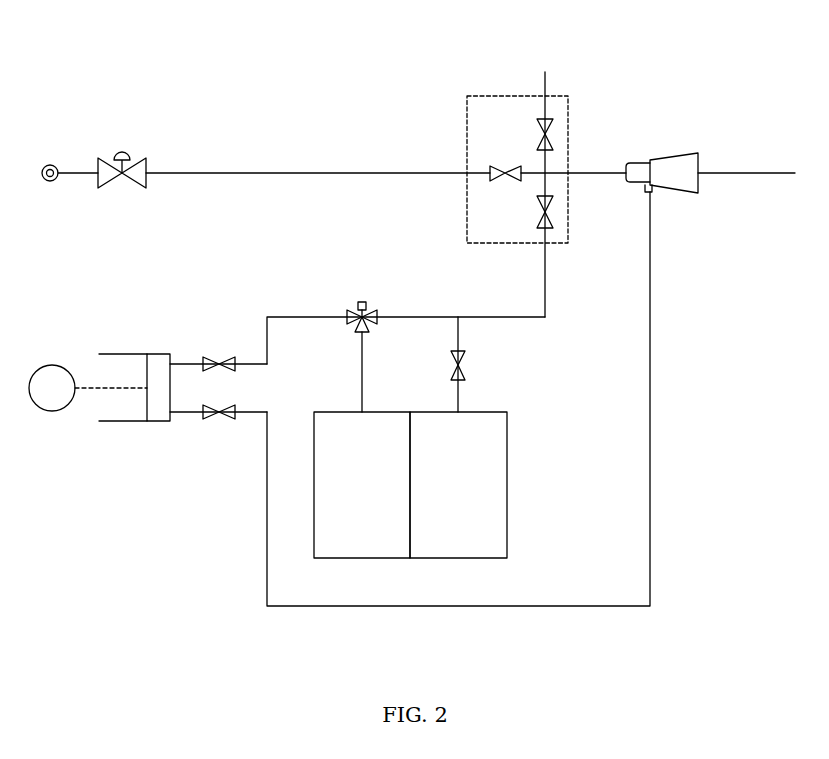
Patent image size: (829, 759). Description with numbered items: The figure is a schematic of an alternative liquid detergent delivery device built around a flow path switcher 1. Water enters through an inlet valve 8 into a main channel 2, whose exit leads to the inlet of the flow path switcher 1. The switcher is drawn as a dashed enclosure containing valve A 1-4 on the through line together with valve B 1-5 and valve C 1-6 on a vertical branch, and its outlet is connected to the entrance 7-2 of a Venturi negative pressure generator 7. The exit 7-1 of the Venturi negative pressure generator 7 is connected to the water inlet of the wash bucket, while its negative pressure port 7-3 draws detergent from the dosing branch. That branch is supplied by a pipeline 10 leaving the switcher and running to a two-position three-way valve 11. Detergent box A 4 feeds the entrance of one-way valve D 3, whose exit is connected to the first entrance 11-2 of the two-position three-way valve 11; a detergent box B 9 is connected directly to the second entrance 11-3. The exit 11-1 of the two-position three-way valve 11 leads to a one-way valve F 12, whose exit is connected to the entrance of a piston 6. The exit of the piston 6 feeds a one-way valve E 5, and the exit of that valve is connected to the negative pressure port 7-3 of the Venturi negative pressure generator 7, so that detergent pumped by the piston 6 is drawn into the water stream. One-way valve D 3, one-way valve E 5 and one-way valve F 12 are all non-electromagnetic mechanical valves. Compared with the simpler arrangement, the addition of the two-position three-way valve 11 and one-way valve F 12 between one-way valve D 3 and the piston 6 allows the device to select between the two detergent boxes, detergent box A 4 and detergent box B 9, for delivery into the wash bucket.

The flow path switcher 1 is at (529, 168).
The valve A 1-4 is at (490, 180).
The valve B 1-5 is at (552, 225).
The valve C 1-6 is at (553, 122).
The main channel 2 is at (280, 173).
The one-way valve D 3 is at (463, 363).
The detergent box A 4 is at (478, 495).
The one-way valve E 5 is at (205, 418).
The piston 6 is at (130, 400).
The Venturi negative pressure generator 7 is at (683, 178).
The exit 7-1 is at (698, 165).
The entrance 7-2 is at (627, 173).
The negative pressure port 7-3 is at (652, 192).
The inlet valve 8 is at (137, 175).
The detergent box B 9 is at (328, 486).
The pipeline 10 is at (267, 317).
The two-position three-way valve 11 is at (362, 318).
The exit 11-1 is at (348, 313).
The entrance 1 11-2 is at (378, 314).
The entrance 2 11-3 is at (355, 331).
The one-way valve F 12 is at (230, 357).